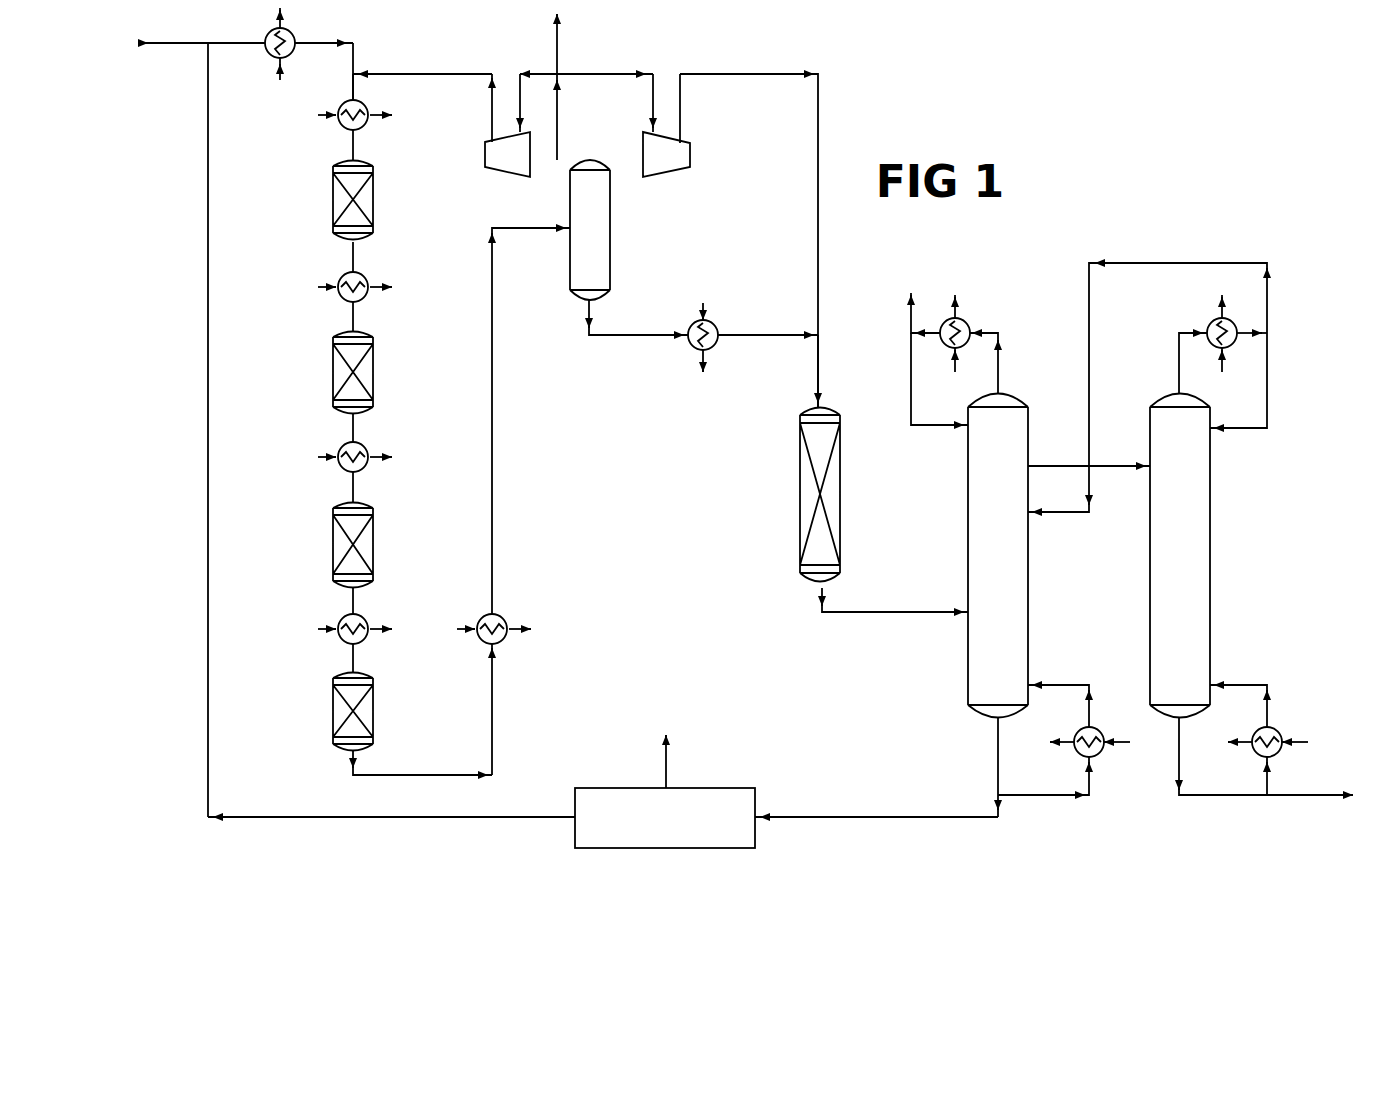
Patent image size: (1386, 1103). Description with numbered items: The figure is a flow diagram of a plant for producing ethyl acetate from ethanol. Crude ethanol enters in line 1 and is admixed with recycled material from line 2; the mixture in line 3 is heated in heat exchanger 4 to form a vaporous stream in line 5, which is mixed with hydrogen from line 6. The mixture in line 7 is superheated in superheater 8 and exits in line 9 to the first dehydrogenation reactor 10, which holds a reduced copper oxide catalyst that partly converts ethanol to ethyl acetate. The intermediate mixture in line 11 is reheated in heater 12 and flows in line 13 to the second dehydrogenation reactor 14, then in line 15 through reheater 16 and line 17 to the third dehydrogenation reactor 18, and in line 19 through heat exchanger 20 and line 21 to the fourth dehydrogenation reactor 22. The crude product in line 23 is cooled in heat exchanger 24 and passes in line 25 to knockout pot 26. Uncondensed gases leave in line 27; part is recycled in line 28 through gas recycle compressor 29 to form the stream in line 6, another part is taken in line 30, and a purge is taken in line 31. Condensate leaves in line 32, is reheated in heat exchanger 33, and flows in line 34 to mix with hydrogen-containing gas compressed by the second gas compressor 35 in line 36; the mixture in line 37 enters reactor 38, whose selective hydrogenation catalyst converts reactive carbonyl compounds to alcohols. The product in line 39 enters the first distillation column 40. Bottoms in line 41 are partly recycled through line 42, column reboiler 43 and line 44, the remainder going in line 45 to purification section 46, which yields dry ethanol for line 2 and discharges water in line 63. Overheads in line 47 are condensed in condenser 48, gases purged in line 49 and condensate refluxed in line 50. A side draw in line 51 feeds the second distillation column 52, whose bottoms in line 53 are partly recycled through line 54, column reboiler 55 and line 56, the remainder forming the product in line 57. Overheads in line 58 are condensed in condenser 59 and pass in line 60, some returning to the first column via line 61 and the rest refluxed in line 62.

The line 1 is at (176, 46).
The line 2 is at (205, 298).
The line 3 is at (240, 43).
The heat exchanger 4 is at (290, 33).
The line 5 is at (355, 58).
The line 6 is at (455, 73).
The line 7 is at (350, 92).
The superheater 8 is at (368, 104).
The line 9 is at (350, 146).
The first dehydrogenation reactor 10 is at (375, 203).
The line 11 is at (345, 267).
The heater 12 is at (362, 278).
The line 13 is at (345, 322).
The second dehydrogenation reactor 14 is at (375, 376).
The line 15 is at (345, 435).
The reheater 16 is at (363, 447).
The line 17 is at (345, 490).
The third dehydrogenation reactor 18 is at (375, 548).
The line 19 is at (345, 610).
The heat exchanger 20 is at (363, 619).
The line 21 is at (345, 663).
The fourth dehydrogenation reactor 22 is at (375, 714).
The line 23 is at (400, 775).
The heat exchanger 24 is at (505, 619).
The line 25 is at (490, 497).
The knockout pot 26 is at (612, 223).
The line 27 is at (572, 112).
The line 28 is at (530, 73).
The gas recycle compressor 29 is at (510, 178).
The line 30 is at (618, 74).
The line 31 is at (558, 44).
The line 32 is at (665, 333).
The heat exchanger 33 is at (712, 322).
The line 34 is at (768, 333).
The second gas compressor 35 is at (690, 156).
The line 36 is at (755, 74).
The line 37 is at (815, 384).
The reactor 38 is at (798, 521).
The line 39 is at (893, 613).
The first distillation column 40 is at (965, 576).
The line 41 is at (995, 777).
The line 42 is at (1028, 795).
The column reboiler 43 is at (1098, 733).
The line 44 is at (1055, 685).
The line 45 is at (870, 817).
The purification section 46 is at (695, 788).
The line 47 is at (998, 373).
The condenser 48 is at (962, 320).
The line 49 is at (908, 324).
The line 50 is at (908, 397).
The line 51 is at (1052, 466).
The second distillation column 52 is at (1148, 579).
The line 53 is at (1205, 795).
The line 54 is at (1275, 790).
The column reboiler 55 is at (1278, 730).
The line 56 is at (1230, 685).
The line 57 is at (1305, 800).
The line 58 is at (1176, 373).
The condenser 59 is at (1210, 326).
The line 60 is at (1262, 332).
The line 61 is at (1086, 326).
The line 62 is at (1232, 428).
The line 63 is at (663, 761).